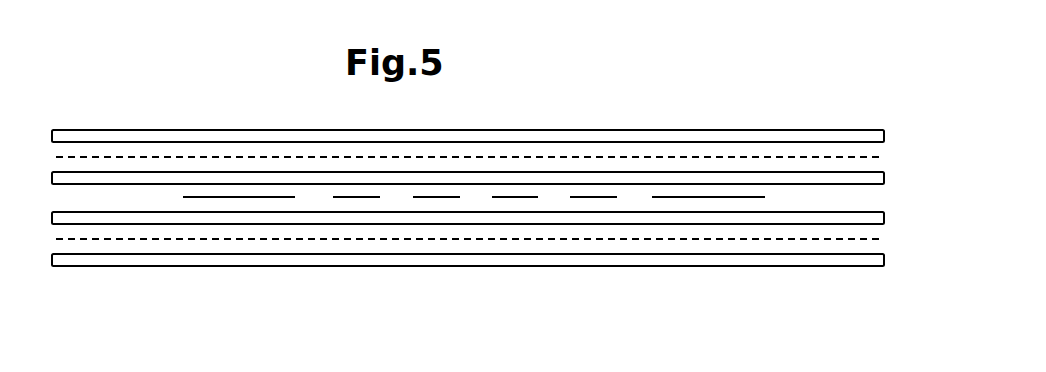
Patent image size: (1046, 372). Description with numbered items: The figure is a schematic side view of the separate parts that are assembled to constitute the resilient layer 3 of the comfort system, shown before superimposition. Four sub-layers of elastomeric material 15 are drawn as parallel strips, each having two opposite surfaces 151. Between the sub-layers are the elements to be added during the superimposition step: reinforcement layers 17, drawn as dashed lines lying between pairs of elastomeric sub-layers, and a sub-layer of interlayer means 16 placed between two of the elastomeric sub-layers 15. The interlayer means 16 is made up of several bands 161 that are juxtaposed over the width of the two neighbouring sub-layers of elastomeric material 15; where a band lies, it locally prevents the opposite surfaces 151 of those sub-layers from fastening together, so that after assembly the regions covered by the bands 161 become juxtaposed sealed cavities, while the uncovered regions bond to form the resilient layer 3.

The resilient layer 3 is at (97, 118).
The sub-layer of elastomeric material 15 is at (766, 137).
The opposite surface 151 is at (578, 136).
The interlayer means 16 is at (229, 198).
The band 161 is at (437, 198).
The reinforcement layer 17 is at (282, 157).